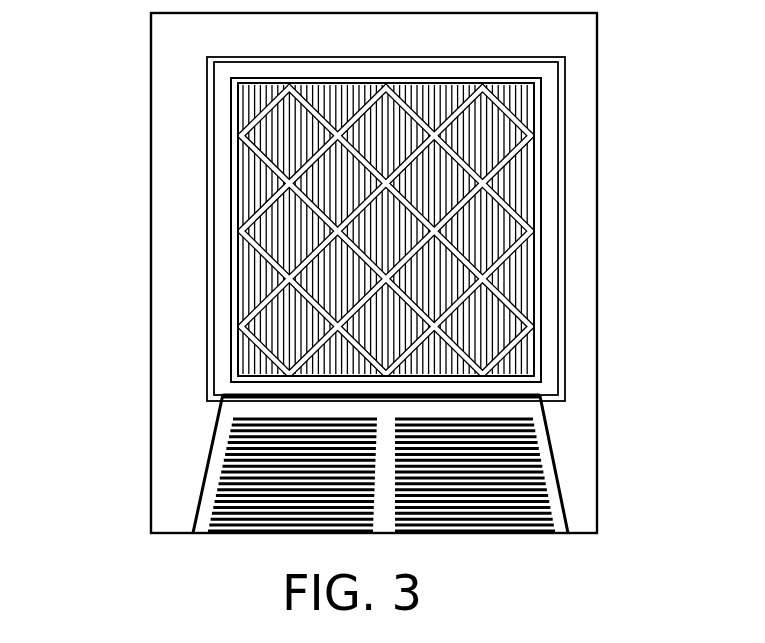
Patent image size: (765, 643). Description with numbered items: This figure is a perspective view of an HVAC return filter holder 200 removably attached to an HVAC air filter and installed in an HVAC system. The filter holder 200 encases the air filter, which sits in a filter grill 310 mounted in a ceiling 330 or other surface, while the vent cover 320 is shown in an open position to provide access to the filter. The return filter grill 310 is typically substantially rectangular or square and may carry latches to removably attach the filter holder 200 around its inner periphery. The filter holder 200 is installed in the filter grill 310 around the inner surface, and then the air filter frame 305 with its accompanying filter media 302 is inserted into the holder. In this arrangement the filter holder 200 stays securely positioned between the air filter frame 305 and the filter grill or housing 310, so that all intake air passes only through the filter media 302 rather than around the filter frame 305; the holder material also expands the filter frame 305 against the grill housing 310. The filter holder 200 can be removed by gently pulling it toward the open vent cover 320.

The ceiling 330 is at (179, 139).
The HVAC return filter holder 200 is at (222, 171).
The air filter frame 305 is at (536, 162).
The filter media 302 is at (477, 317).
The filter grill 310 is at (560, 368).
The vent cover 320 is at (547, 485).